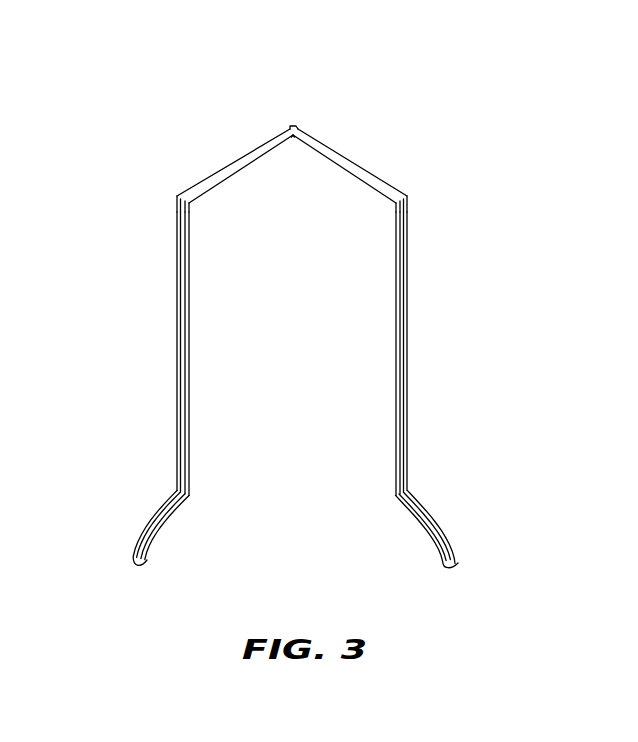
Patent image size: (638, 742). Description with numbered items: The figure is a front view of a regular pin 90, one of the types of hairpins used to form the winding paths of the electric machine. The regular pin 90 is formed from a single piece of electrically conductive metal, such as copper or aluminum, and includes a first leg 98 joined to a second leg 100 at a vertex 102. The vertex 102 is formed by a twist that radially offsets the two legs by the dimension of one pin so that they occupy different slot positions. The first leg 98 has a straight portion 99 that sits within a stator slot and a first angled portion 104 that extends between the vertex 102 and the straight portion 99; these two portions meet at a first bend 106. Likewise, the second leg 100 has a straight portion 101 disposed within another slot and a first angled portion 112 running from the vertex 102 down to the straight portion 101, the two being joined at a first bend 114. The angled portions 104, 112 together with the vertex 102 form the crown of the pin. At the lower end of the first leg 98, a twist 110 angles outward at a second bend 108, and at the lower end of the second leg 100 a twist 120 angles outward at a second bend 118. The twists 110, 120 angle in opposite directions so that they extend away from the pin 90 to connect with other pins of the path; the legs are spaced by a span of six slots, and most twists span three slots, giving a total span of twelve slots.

The regular pin 90 is at (145, 92).
The first leg 98 is at (415, 202).
The straight portion 99 is at (407, 277).
The second leg 100 is at (180, 342).
The straight portion 101 is at (187, 398).
The vertex 102 is at (294, 124).
The first angled portion 104 is at (348, 160).
The first bend 106 is at (396, 206).
The second bend 108 is at (405, 493).
The twist 110 is at (435, 520).
The first angled portion 112 is at (243, 162).
The first bend 114 is at (190, 206).
The second bend 118 is at (189, 497).
The twist 120 is at (157, 512).